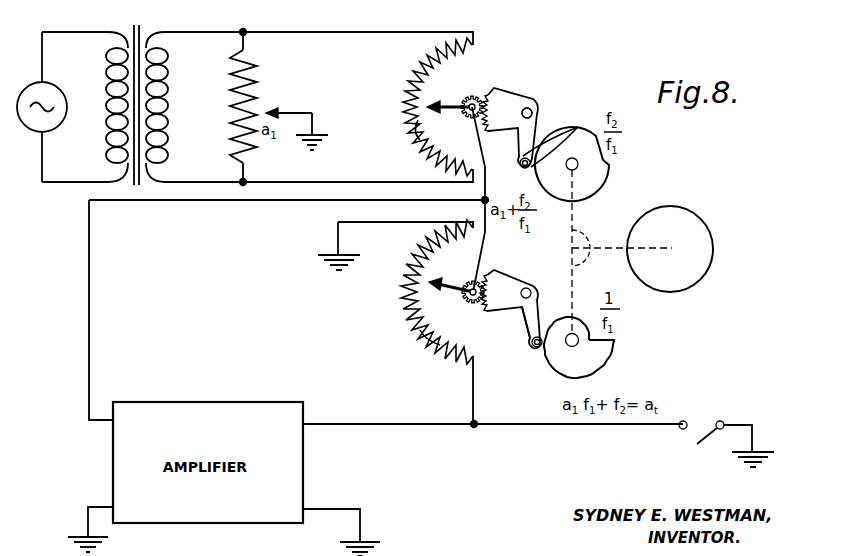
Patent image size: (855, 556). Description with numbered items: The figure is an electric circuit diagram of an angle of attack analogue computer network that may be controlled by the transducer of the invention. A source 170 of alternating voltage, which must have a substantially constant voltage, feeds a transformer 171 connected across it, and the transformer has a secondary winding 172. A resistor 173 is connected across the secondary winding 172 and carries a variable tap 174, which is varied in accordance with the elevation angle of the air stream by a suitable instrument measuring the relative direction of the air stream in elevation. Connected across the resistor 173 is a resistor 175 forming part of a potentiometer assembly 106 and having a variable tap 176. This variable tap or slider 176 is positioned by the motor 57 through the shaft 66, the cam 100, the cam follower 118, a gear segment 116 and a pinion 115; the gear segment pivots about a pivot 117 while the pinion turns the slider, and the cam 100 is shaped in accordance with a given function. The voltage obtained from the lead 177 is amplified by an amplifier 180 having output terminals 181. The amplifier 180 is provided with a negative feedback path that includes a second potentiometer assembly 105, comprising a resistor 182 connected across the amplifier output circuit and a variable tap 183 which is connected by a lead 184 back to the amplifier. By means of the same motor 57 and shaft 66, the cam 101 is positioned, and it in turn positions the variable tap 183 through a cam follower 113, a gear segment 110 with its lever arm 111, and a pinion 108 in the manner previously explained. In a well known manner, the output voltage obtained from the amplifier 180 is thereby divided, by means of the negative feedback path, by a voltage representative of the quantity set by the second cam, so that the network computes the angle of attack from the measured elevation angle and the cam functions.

The source of alternating voltage 170 is at (60, 125).
The transformer 171 is at (129, 20).
The secondary winding 172 is at (168, 88).
The resistor 173 is at (256, 62).
The variable tap 174 is at (272, 110).
The potentiometer assembly 106 is at (421, 70).
The resistor 175 is at (418, 130).
The variable tap 176 is at (436, 105).
The lead 177 is at (486, 166).
The pinion 115 is at (497, 70).
The gear segment 116 is at (500, 93).
The pivot 117 is at (532, 104).
The cam follower 118 is at (577, 128).
The cam 100 is at (610, 178).
The motor 57 is at (640, 218).
The shaft 66 is at (578, 258).
The lead 184 is at (488, 232).
The potentiometer assembly 105 is at (411, 300).
The resistor 182 is at (440, 342).
The variable tap 183 is at (436, 296).
The pinion 108 is at (468, 310).
The gear segment 110 is at (495, 280).
The lever arm 111 is at (512, 314).
The cam follower 113 is at (535, 350).
The cam 101 is at (615, 352).
The amplifier 180 is at (348, 430).
The output terminals 181 is at (680, 429).